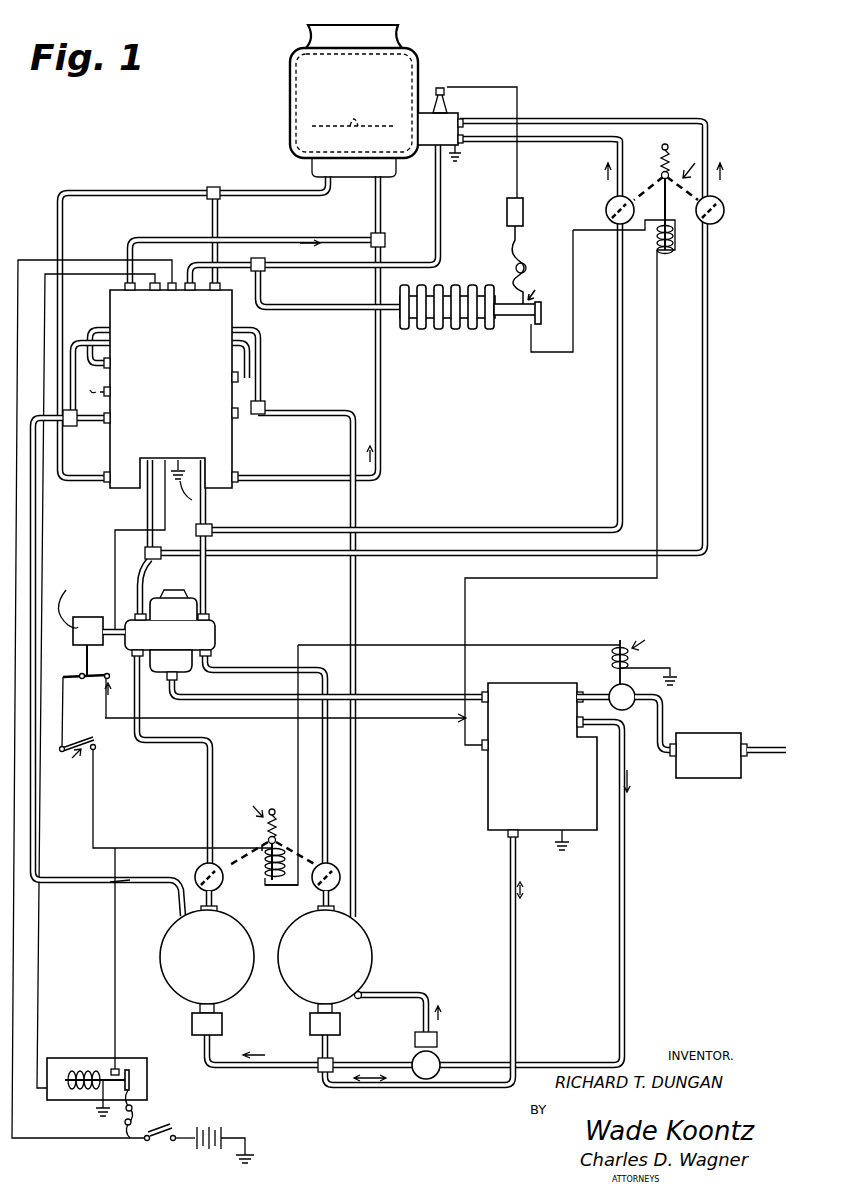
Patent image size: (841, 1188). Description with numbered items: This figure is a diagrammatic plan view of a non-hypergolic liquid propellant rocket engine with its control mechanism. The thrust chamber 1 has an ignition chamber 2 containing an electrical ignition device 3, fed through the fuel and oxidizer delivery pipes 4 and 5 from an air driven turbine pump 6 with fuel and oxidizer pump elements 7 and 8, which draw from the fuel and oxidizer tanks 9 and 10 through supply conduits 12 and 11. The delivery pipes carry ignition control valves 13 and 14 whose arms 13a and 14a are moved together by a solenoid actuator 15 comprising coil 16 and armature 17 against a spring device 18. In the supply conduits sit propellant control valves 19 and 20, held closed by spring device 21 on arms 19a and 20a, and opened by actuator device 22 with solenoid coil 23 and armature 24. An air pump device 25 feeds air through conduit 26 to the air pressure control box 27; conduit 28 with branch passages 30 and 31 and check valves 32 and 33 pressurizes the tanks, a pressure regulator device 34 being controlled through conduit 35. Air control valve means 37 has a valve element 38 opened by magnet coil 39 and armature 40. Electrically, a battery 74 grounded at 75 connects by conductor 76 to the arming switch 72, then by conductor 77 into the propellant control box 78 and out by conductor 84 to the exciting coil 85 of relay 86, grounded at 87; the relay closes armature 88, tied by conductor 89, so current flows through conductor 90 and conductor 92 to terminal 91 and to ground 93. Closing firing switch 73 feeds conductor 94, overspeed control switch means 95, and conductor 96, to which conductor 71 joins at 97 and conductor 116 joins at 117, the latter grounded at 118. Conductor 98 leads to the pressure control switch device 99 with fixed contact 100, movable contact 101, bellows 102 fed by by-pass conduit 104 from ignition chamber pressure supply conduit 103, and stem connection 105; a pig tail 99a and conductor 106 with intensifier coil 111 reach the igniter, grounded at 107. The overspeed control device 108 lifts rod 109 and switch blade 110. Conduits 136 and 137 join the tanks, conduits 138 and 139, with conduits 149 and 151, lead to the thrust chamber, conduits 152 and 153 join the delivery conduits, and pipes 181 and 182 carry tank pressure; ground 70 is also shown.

The liquid fuel rocket thrust chamber 1 is at (405, 72).
The ignition chamber 2 is at (425, 146).
The electrical ignition device 3 is at (446, 104).
The fuel delivery pipe 4 is at (472, 145).
The oxidizer delivery pipe 5 is at (586, 118).
The air driven turbine pump 6 is at (198, 598).
The fuel pump element 7 is at (216, 632).
The oxidizer pump element 8 is at (128, 622).
The fuel supply tank 9 is at (364, 937).
The oxidizer supply tank 10 is at (236, 926).
The oxidizer supply conduit 11 is at (276, 668).
The fuel supply conduit 12 is at (213, 782).
The ignition control valve 13 is at (608, 196).
The operating arm 13a is at (650, 183).
The ignition control valve 14 is at (725, 207).
The operating arm 14a is at (691, 188).
The solenoid actuator 15 is at (699, 165).
The solenoid coil 16 is at (674, 238).
The armature 17 is at (669, 209).
The spring device 18 is at (662, 156).
The propellant control valve 19 is at (340, 877).
The operating arm 19a is at (320, 862).
The propellant control valve 20 is at (194, 868).
The operating arm 20a is at (248, 867).
The spring device 21 is at (290, 798).
The actuator device 22 is at (247, 806).
The solenoid coil 23 is at (271, 864).
The actuating armature 24 is at (264, 846).
The air pump device 25 is at (712, 772).
The air supply conduit 26 is at (244, 696).
The air pressure control box 27 is at (498, 810).
The air supply conduit 28 is at (627, 854).
The branch passage 30 is at (332, 1034).
The branch passage 31 is at (208, 1036).
The check valve 32 is at (308, 1024).
The check valve 33 is at (188, 1022).
The pressure regulator device 34 is at (445, 1053).
The conduit 35 is at (410, 996).
The air control valve means 37 is at (648, 634).
The valve element 38 is at (636, 706).
The magnet coil 39 is at (630, 656).
The actuating armature 40 is at (628, 680).
The ground 70 is at (568, 852).
The conductor 71 is at (478, 748).
The arming switch 72 is at (170, 1130).
The firing switch 73 is at (69, 762).
The battery 74 is at (222, 1130).
The ground 75 is at (256, 1157).
The conductor 76 is at (178, 1142).
The conductor 77 is at (112, 262).
The propellant control box 78 is at (274, 374).
The conductor 84 is at (72, 276).
The exciting coil 85 is at (96, 1070).
The arm circuit relay 86 is at (152, 1050).
The ground 87 is at (97, 1112).
The switch contact armature 88 is at (130, 1075).
The conductor 89 is at (134, 1110).
The conductor 90 is at (118, 882).
The firing control switch terminal 91 is at (97, 748).
The conductor 92 is at (592, 644).
The ground 93 is at (678, 680).
The conductor 94 is at (66, 738).
The overspeed control switch means 95 is at (80, 622).
The conductor 96 is at (660, 266).
The connection point 97 is at (463, 716).
The conductor 98 is at (574, 300).
The pressure control switch device 99 is at (538, 265).
The pig tail 99a is at (524, 258).
The fixed contact 100 is at (525, 328).
The movable contact 101 is at (543, 318).
The bellows 102 is at (470, 284).
The ignition chamber pressure supply conduit 103 is at (430, 243).
The by-pass conduit 104 is at (326, 307).
The stem connection 105 is at (505, 300).
The conductor 106 is at (518, 104).
The ground 107 is at (459, 162).
The overspeed control device 108 is at (104, 618).
The switch blade lifting rod 109 is at (84, 660).
The overspeed switch contact blade 110 is at (90, 680).
The intensifier coil 111 is at (524, 208).
The conductor 116 is at (115, 545).
The connection point 117 is at (122, 698).
The ground 118 is at (190, 503).
The conduit 136 is at (108, 333).
The conduit 137 is at (262, 353).
The conduit 138 is at (380, 222).
The conduit 139 is at (218, 222).
The conduit 149 is at (322, 476).
The conduit 151 is at (152, 198).
The conduit 152 is at (206, 530).
The conduit 153 is at (148, 512).
The propellant tank pressure supply conduit 181 is at (256, 414).
The propellant tank pressure supply conduit 182 is at (88, 422).